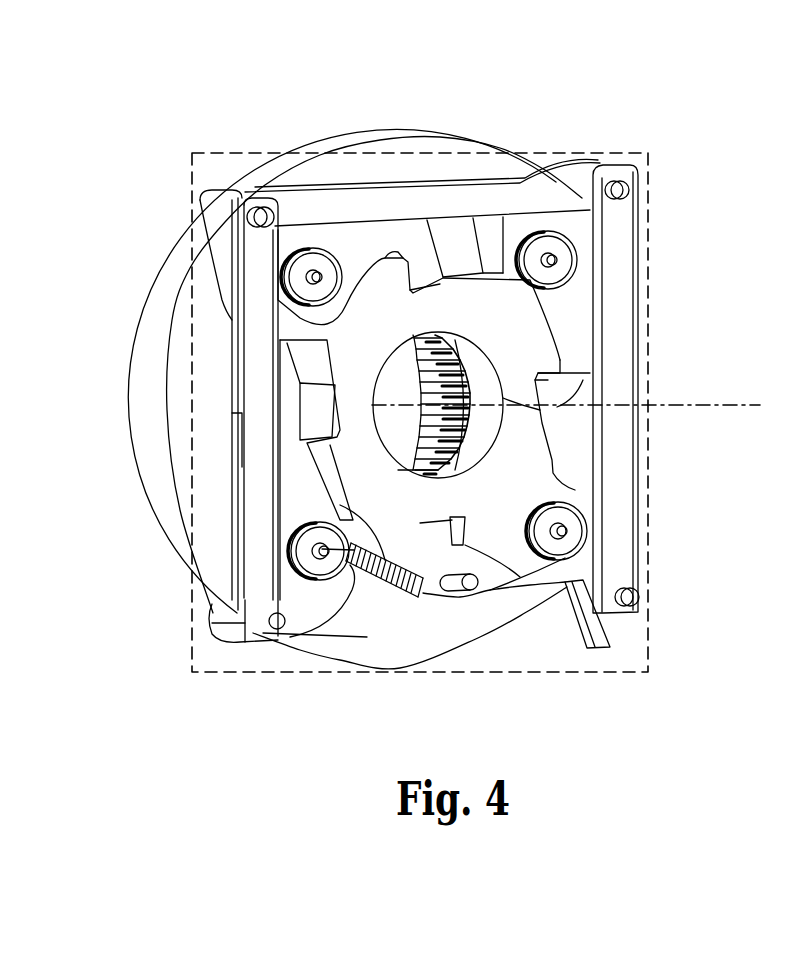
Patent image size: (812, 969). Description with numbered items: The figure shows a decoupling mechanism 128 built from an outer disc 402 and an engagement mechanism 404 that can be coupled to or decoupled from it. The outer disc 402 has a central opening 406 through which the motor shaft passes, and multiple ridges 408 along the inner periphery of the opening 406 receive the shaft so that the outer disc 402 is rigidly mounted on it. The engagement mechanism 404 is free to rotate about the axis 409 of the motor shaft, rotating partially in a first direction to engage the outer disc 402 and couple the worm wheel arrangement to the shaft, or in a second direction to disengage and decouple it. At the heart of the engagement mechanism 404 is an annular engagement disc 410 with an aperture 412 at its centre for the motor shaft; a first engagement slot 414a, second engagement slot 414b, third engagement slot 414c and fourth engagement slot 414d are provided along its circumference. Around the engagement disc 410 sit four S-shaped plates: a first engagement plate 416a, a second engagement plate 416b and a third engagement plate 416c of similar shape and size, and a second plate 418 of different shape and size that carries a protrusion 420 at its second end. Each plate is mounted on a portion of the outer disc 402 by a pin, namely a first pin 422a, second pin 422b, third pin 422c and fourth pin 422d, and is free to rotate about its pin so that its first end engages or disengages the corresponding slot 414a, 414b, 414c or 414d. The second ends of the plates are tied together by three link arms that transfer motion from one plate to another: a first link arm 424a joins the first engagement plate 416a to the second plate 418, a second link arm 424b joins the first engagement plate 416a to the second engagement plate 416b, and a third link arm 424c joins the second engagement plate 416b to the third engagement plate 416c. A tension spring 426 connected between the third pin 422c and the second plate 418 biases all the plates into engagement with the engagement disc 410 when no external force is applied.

The decoupling mechanism 128 is at (556, 112).
The outer disc 402 is at (369, 136).
The engagement mechanism 404 is at (192, 620).
The opening 406 is at (400, 376).
The ridges 408 is at (436, 382).
The axis 409 is at (702, 408).
The engagement disc 410 is at (519, 412).
The aperture 412 is at (455, 458).
The first engagement slot 414a is at (538, 373).
The second engagement slot 414b is at (405, 290).
The third engagement slot 414c is at (300, 434).
The fourth engagement slot 414d is at (460, 522).
The first engagement plate 416a is at (568, 342).
The second engagement plate 416b is at (362, 248).
The third engagement plate 416c is at (300, 494).
The second plate 418 is at (503, 562).
The protrusion 420 is at (623, 634).
The first pin 422a is at (552, 260).
The second pin 422b is at (307, 275).
The third pin 422c is at (298, 548).
The fourth pin 422d is at (576, 520).
The first link arm 424a is at (610, 303).
The second link arm 424b is at (457, 186).
The third link arm 424c is at (265, 396).
The tension spring 426 is at (388, 573).